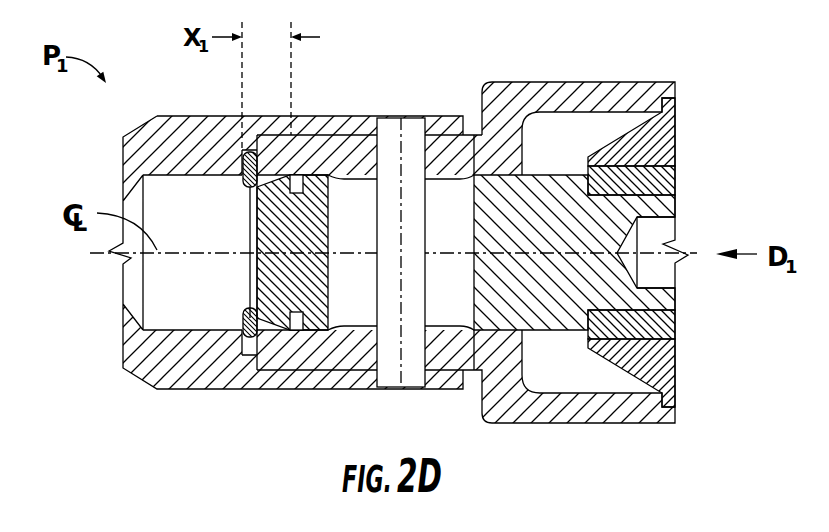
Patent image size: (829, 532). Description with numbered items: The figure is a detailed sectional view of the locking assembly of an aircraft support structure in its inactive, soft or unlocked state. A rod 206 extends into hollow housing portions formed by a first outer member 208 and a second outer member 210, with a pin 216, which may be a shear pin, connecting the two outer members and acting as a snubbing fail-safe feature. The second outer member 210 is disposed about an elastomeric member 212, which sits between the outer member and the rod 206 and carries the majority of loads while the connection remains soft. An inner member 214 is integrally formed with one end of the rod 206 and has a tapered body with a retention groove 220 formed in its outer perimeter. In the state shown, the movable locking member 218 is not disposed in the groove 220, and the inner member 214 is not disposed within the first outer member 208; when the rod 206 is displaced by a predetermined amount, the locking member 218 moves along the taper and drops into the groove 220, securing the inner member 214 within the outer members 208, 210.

The rod 206 is at (668, 293).
The first outer member 208 is at (215, 116).
The second outer member 210 is at (646, 82).
The elastomeric member 212 is at (665, 139).
The inner member 214 is at (277, 308).
The pin 216 is at (409, 388).
The locking member 218 is at (247, 337).
The retention groove 220 is at (296, 167).